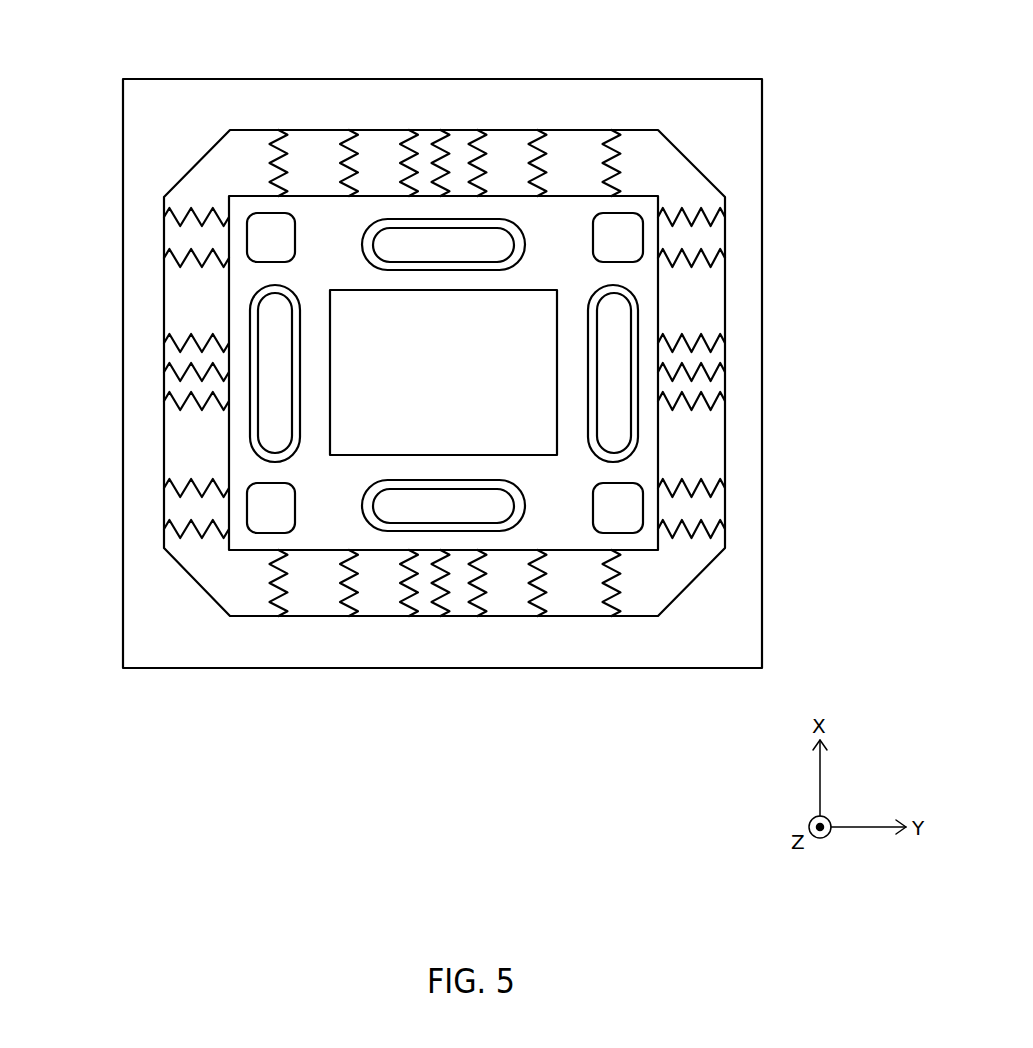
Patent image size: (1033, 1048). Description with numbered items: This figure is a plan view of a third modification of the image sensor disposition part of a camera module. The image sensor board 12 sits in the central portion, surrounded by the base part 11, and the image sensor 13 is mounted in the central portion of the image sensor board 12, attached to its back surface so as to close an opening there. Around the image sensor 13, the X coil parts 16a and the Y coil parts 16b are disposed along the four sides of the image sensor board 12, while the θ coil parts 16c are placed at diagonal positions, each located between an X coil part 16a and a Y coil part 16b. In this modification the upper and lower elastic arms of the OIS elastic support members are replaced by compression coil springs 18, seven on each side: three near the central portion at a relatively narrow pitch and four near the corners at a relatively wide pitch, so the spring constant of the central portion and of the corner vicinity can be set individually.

The base part 11 is at (652, 643).
The image sensor board 12 is at (508, 540).
The image sensor 13 is at (533, 440).
The X coil part 16a is at (455, 227).
The Y coil part 16b is at (253, 427).
The θ coil part 16c is at (255, 237).
The compression coil spring 18 is at (430, 130).